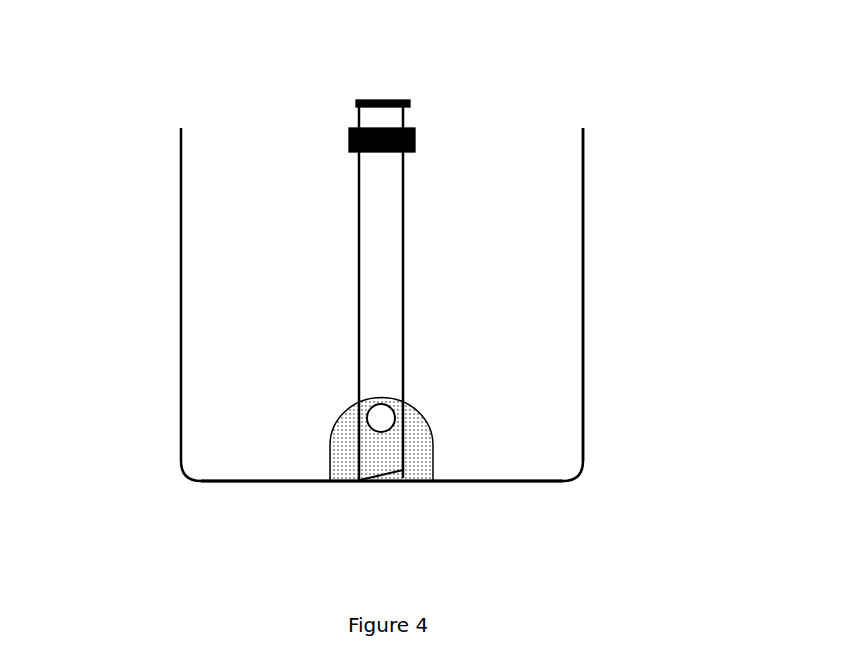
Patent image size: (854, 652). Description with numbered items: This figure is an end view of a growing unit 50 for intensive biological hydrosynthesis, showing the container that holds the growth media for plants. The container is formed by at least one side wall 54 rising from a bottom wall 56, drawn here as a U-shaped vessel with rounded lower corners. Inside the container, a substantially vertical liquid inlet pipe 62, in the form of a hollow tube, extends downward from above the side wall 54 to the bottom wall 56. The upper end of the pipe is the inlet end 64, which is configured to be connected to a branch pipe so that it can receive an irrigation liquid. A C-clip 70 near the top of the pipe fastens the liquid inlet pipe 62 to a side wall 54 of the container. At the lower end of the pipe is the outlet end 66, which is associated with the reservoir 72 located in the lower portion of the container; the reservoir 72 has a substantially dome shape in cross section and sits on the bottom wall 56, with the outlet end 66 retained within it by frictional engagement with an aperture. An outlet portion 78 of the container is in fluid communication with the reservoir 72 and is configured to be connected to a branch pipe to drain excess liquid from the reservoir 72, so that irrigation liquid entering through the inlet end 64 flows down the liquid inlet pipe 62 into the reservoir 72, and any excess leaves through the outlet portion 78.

The growing unit 50 is at (580, 96).
The side wall 54 is at (608, 227).
The bottom wall 56 is at (206, 498).
The liquid inlet pipe 62 is at (334, 321).
The inlet end 64 is at (310, 104).
The outlet end 66 is at (403, 489).
The C-clip 70 is at (317, 142).
The reservoir 72 is at (306, 440).
The outlet portion 78 is at (400, 417).